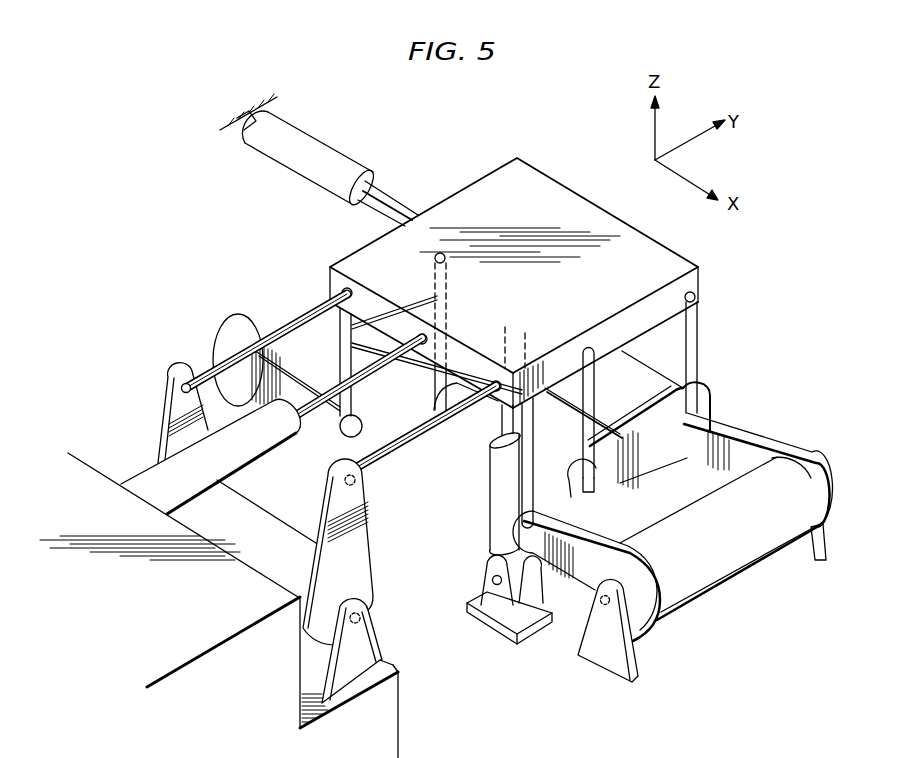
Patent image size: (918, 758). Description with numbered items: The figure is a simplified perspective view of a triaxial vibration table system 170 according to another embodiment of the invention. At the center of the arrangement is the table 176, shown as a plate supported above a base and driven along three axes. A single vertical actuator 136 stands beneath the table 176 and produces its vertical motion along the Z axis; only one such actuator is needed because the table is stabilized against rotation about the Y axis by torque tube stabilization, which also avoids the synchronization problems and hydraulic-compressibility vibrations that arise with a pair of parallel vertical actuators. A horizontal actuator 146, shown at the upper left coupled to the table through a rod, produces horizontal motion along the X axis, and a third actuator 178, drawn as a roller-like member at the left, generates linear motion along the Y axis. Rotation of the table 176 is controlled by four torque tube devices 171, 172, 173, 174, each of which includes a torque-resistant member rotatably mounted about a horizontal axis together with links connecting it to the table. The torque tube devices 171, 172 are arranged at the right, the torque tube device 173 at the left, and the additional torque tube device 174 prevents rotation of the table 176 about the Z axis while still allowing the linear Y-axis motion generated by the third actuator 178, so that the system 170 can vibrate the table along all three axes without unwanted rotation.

The horizontal actuator 146 is at (343, 158).
The table 176 is at (463, 187).
The torque tube device 173 is at (265, 312).
The third actuator 178 is at (246, 472).
The torque tube device 174 is at (378, 602).
The actuator 136 is at (490, 505).
The triaxial system 170 is at (679, 515).
The torque tube device 171 is at (708, 396).
The torque tube device 172 is at (808, 460).